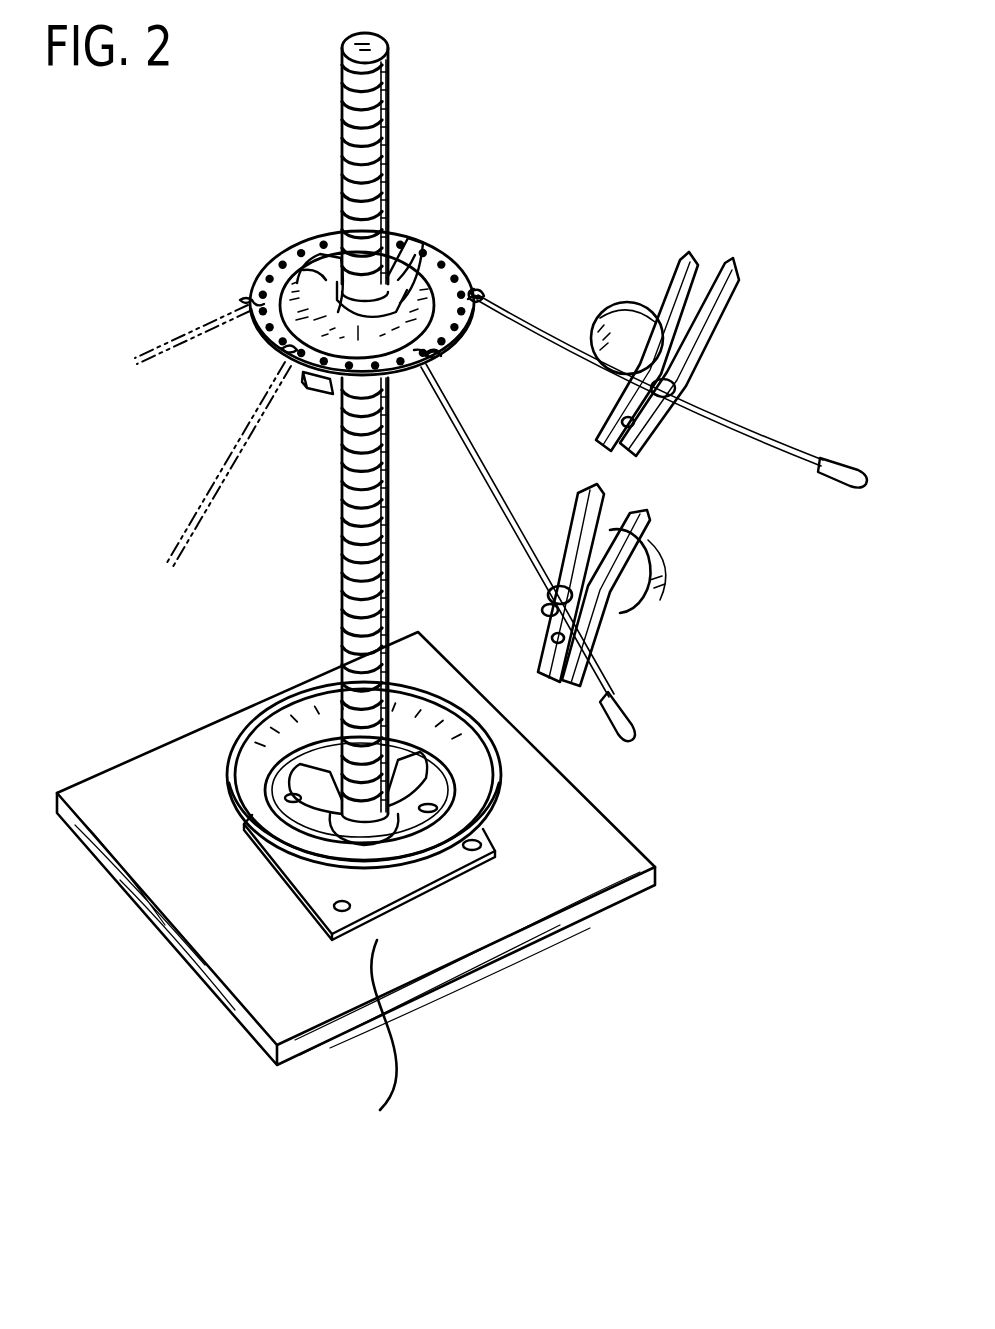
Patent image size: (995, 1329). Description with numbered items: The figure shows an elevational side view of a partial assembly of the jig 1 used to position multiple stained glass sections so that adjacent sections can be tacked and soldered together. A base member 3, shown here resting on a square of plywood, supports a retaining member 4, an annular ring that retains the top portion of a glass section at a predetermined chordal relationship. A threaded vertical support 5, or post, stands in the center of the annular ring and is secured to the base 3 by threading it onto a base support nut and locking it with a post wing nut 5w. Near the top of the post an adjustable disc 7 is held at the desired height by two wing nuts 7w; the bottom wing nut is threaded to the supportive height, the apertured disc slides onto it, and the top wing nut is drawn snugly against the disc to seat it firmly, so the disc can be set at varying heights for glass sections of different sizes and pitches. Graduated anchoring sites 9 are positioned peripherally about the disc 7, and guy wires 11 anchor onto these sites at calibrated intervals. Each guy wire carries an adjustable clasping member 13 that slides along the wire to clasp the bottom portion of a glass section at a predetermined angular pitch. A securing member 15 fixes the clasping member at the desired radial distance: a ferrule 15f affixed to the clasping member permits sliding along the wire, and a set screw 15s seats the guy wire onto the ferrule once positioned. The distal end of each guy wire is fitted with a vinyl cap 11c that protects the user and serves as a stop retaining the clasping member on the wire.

The jig 1 is at (487, 243).
The base member 3 is at (496, 835).
The retaining member 4 is at (232, 783).
The vertical support 5 is at (340, 589).
The post wing nut 5w is at (322, 829).
The adjustable disc 7 is at (254, 281).
The wing nuts 7w is at (326, 446).
The graduated anchoring sites 9 is at (473, 330).
The guy wires 11 is at (529, 324).
The vinyl cap 11c is at (645, 733).
The adjustable clasping member 13 is at (650, 440).
The securing member 15 is at (707, 257).
The set screw 15s is at (630, 365).
The ferrule 15f is at (652, 390).